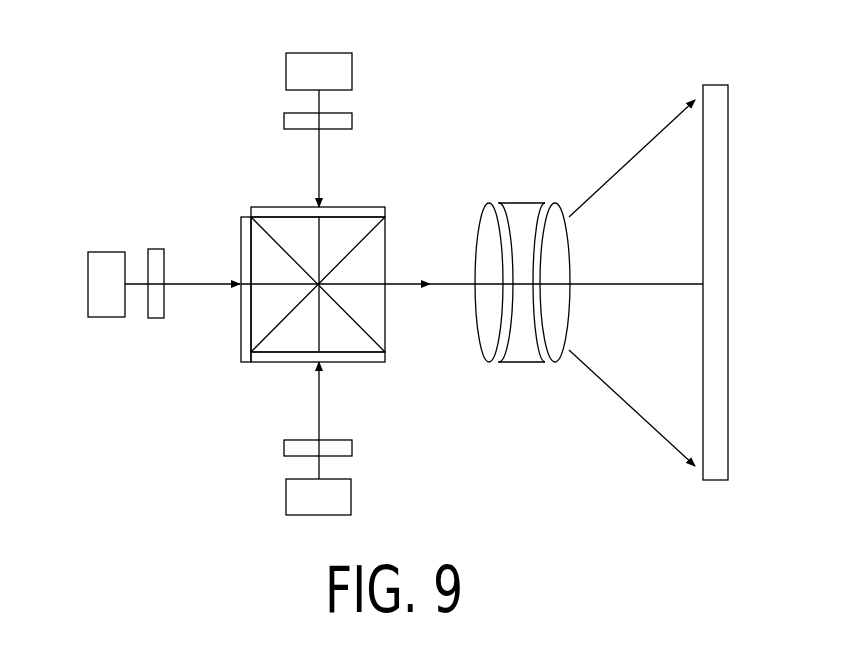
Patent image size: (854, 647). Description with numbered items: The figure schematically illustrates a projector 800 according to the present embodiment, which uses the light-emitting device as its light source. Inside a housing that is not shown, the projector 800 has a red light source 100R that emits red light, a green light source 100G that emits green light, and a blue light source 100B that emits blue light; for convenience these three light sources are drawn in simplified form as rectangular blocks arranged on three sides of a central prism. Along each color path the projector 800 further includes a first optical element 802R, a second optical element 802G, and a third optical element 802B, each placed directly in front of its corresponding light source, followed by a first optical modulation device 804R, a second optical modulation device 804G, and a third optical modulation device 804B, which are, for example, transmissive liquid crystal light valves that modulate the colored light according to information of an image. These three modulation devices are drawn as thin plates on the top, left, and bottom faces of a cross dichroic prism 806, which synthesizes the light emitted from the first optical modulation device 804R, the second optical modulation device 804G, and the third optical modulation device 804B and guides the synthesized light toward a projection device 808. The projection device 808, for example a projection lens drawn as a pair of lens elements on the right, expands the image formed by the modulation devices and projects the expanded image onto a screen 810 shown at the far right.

The projector 800 is at (683, 24).
The red light source 100R is at (333, 73).
The green light source 100G is at (105, 312).
The blue light source 100B is at (340, 502).
The first optical element 802R is at (345, 124).
The second optical element 802G is at (157, 312).
The third optical element 802B is at (347, 448).
The first optical modulation device 804R is at (260, 212).
The second optical modulation device 804G is at (243, 345).
The third optical modulation device 804B is at (383, 356).
The cross dichroic prism 806 is at (373, 307).
The projection device 808 is at (568, 196).
The screen 810 is at (714, 93).